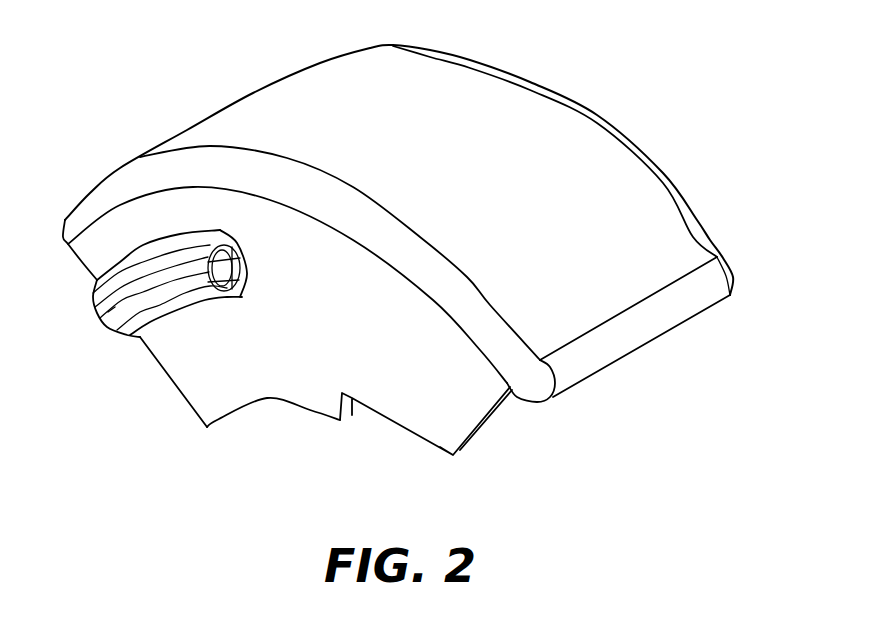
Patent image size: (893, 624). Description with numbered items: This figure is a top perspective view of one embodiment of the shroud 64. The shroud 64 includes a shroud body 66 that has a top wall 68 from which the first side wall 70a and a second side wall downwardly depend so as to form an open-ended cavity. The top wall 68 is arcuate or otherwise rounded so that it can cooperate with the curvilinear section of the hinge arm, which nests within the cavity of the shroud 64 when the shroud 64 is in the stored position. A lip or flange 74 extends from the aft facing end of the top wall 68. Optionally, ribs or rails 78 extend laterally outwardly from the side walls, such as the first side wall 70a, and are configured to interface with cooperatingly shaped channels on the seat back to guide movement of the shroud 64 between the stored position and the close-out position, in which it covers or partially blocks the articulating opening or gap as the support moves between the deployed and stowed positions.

The shroud 64 is at (589, 113).
The shroud body 66 is at (700, 225).
The top wall 68 is at (483, 173).
The first side wall 70a is at (300, 372).
The lip or flange 74 is at (669, 331).
The ribs or rails 78 is at (93, 325).